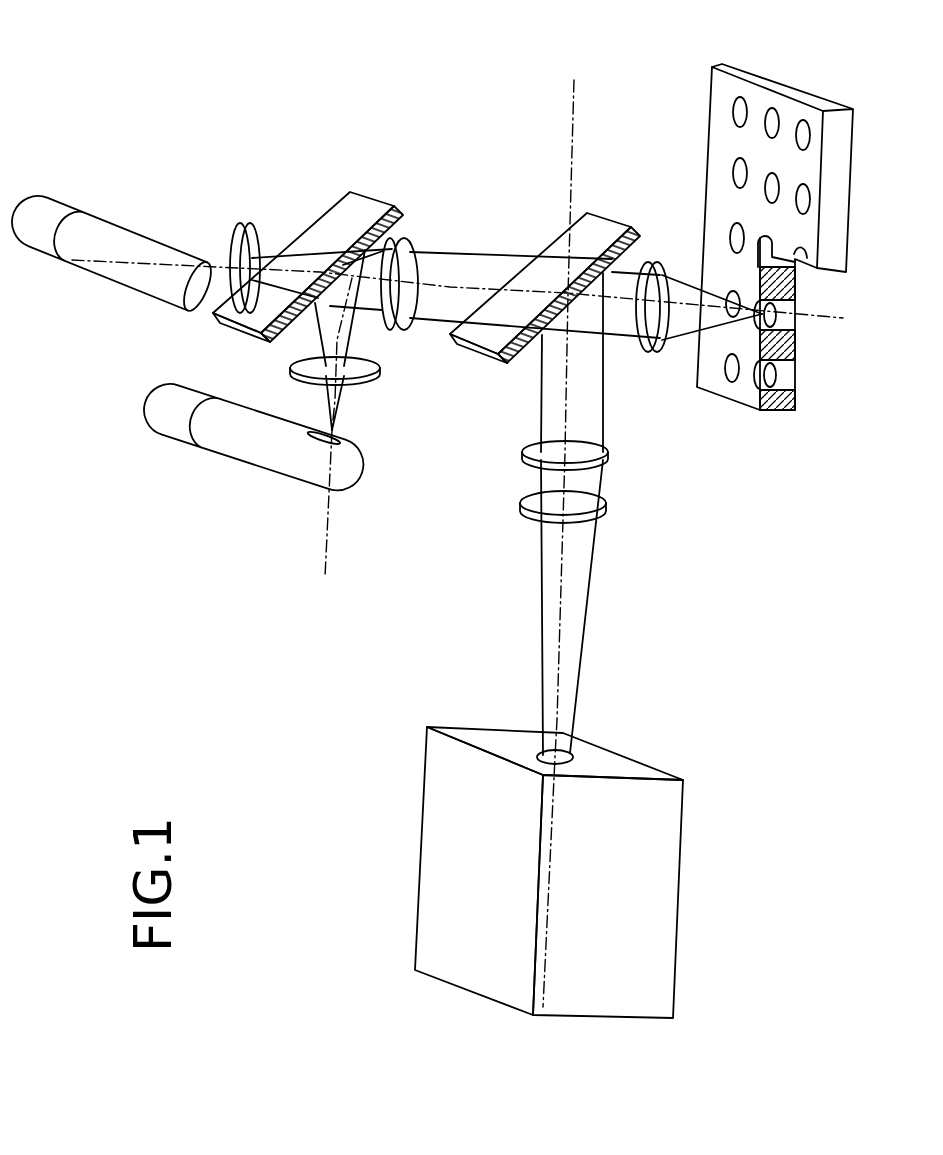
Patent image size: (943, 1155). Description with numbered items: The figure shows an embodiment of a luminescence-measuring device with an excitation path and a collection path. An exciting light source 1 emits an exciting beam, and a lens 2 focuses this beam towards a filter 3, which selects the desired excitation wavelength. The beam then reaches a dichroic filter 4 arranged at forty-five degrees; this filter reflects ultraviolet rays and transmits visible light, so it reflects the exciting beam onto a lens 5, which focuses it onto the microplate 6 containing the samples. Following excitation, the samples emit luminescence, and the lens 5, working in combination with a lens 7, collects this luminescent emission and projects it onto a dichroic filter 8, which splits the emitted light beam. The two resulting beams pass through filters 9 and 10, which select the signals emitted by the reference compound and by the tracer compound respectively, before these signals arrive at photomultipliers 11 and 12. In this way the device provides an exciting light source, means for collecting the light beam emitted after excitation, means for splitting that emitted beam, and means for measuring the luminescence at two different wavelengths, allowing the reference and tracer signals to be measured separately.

The exciting light source 1 is at (430, 868).
The lens 2 is at (518, 503).
The filter 3 is at (522, 453).
The dichroic filter 4 is at (550, 247).
The lens 5 is at (663, 262).
The microplate 6 is at (794, 84).
The lens 7 is at (410, 330).
The dichroic filter 8 is at (347, 212).
The filter 9 is at (292, 368).
The filter 10 is at (248, 222).
The photomultiplier 11 is at (268, 458).
The photomultiplier 12 is at (137, 243).